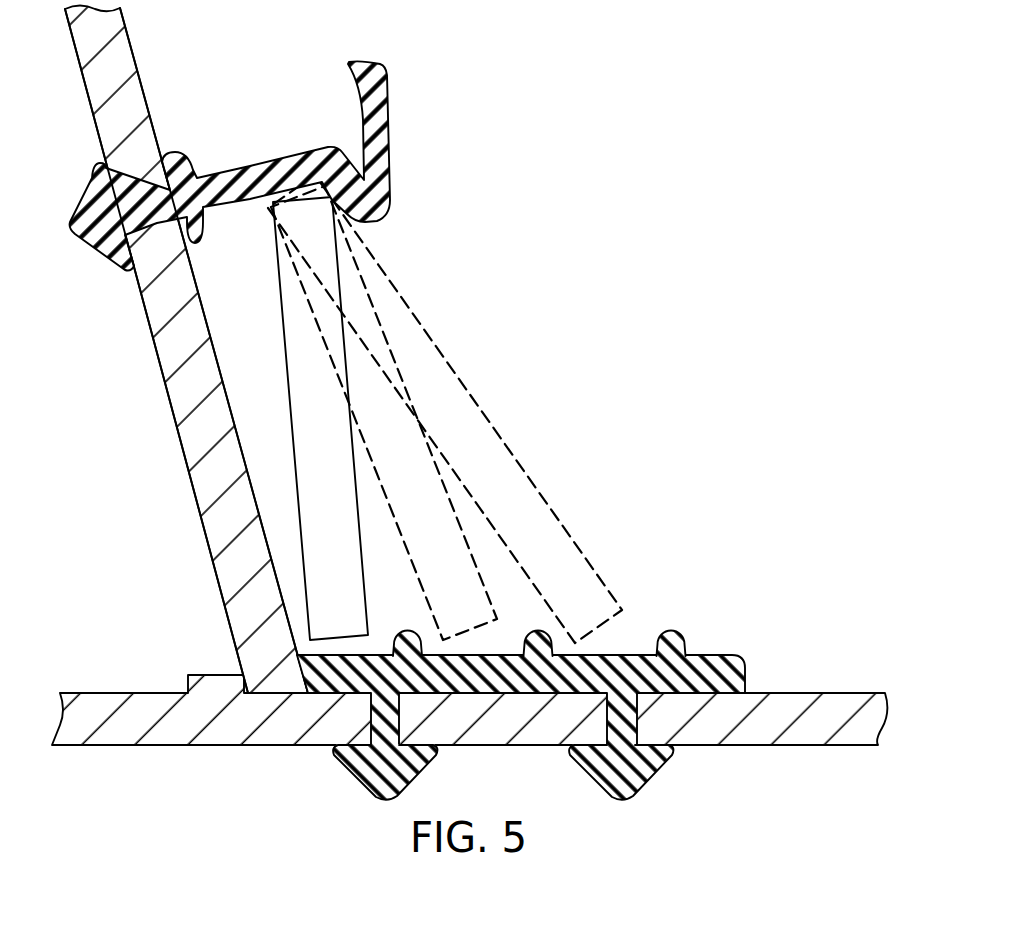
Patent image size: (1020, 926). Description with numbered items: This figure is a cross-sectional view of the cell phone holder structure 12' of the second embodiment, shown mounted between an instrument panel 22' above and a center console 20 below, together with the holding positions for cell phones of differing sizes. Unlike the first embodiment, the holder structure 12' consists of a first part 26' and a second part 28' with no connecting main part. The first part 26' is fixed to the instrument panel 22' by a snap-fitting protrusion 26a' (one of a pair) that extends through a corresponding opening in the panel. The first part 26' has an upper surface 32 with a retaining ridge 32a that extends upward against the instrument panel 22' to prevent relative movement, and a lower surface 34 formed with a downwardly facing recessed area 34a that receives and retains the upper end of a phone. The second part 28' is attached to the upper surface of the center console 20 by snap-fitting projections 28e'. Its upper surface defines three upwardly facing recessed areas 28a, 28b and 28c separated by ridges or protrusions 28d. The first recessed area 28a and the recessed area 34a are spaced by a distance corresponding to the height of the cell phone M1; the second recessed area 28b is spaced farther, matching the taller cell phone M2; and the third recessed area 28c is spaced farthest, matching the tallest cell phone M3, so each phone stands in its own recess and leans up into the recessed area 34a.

The cell phone holder structure 12' is at (698, 247).
The center console 20 is at (807, 693).
The instrument panel 22' is at (186, 350).
The first part 26' is at (271, 165).
The snap-fitting protrusion 26a' is at (68, 271).
The second part 28' is at (550, 677).
The first recessed area 28a is at (335, 652).
The second recessed area 28b is at (458, 652).
The third recessed area 28c is at (620, 653).
The ridges or protrusions 28d is at (394, 636).
The snap-fitting projections 28e' is at (516, 779).
The upper surface 32 is at (267, 160).
The retaining ridge 32a is at (176, 154).
The lower surface 34 is at (376, 220).
The downwardly facing recessed area 34a is at (229, 208).
The cell phone M1 is at (328, 519).
The cell phone M2 is at (427, 507).
The cell phone M3 is at (457, 422).